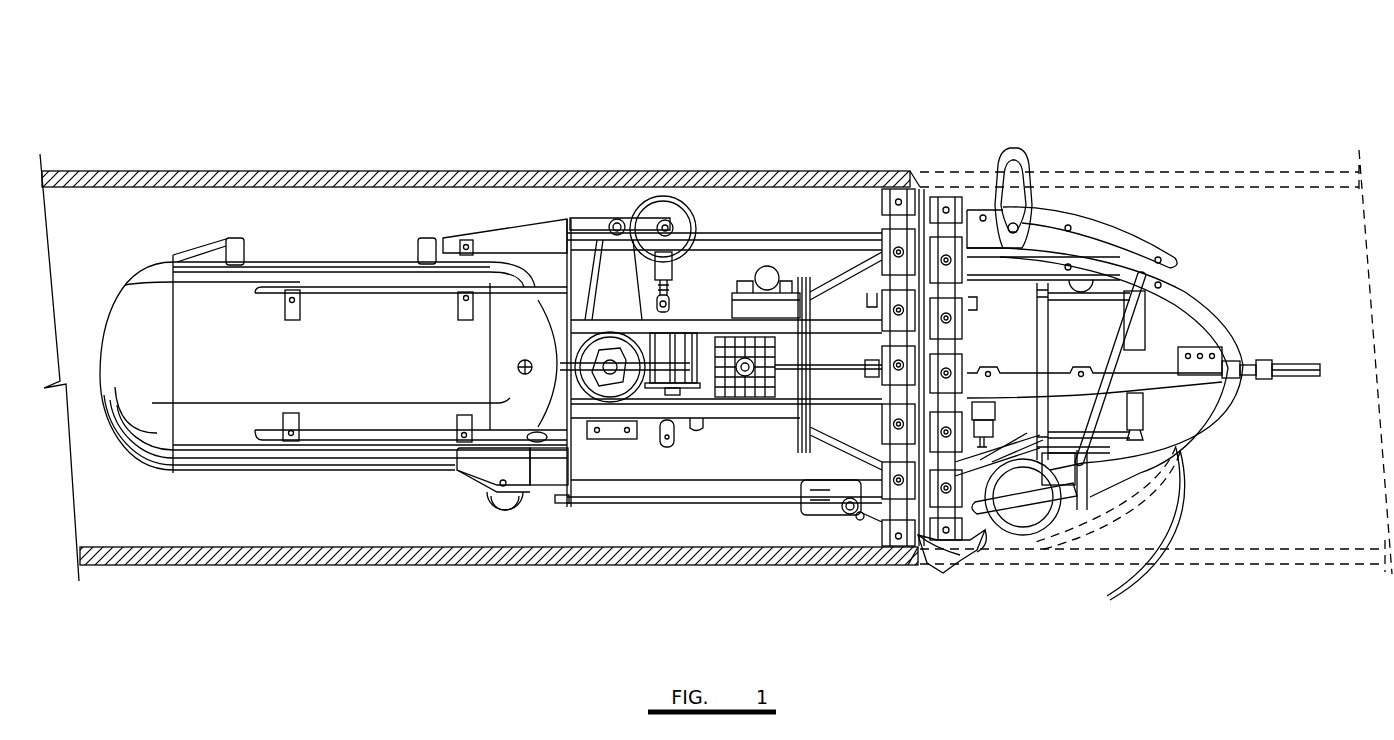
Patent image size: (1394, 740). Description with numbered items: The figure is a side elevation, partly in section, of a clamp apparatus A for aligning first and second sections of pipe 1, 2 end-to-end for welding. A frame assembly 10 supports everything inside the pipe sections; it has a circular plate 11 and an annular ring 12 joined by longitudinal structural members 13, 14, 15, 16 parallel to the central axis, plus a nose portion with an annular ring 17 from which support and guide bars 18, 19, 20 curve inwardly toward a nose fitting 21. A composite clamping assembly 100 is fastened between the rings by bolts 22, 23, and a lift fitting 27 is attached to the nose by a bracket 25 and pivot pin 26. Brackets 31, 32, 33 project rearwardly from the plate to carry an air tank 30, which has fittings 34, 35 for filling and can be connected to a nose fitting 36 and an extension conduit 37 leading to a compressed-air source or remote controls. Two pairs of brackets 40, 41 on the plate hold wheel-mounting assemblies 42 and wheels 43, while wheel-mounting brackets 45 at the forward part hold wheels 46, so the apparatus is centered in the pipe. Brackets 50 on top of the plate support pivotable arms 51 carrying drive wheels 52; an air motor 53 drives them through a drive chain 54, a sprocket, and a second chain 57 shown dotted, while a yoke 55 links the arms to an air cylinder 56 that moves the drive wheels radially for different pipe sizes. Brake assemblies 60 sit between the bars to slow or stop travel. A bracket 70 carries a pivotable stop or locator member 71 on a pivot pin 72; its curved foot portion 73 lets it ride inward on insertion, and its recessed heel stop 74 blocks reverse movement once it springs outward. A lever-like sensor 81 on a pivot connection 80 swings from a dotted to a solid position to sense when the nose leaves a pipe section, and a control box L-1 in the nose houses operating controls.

The first section of pipe 1 is at (238, 562).
The second section of pipe 2 is at (1300, 556).
The frame assembly 10 is at (762, 212).
The circular plate 11 is at (565, 470).
The annular ring 12 is at (873, 222).
The longitudinal structural member 13 is at (705, 500).
The longitudinal structural member 14 is at (712, 428).
The longitudinal structural member 15 is at (740, 310).
The longitudinal structural member 16 is at (757, 233).
The annular ring 17 is at (990, 208).
The support and guide bar 18 is at (1170, 290).
The support and guide bar 19 is at (1200, 420).
The support and guide bar 20 is at (1190, 385).
The nose fitting 21 is at (1218, 350).
The bolt 22 is at (868, 285).
The bolt 23 is at (866, 357).
The bracket 25 is at (1040, 240).
The pivot pin 26 is at (1025, 225).
The lift fitting 27 is at (1008, 148).
The air tank 30 is at (247, 372).
The bracket 31 is at (387, 430).
The bracket 32 is at (372, 300).
The bracket 33 is at (497, 240).
The fitting 34 is at (425, 238).
The fitting 35 is at (235, 236).
The fitting 36 is at (1258, 380).
The extension conduit 37 is at (1290, 366).
The bracket 40 is at (548, 500).
The bracket 41 is at (540, 485).
The wheel-mounting assembly 42 is at (462, 468).
The wheel 43 is at (483, 505).
The wheel-mounting bracket 45 is at (1070, 507).
The wheel 46 is at (1025, 530).
The bracket 50 is at (533, 216).
The pivotable arm 51 is at (650, 222).
The drive wheel 52 is at (668, 216).
The air motor 53 is at (623, 388).
The drive chain 54 is at (593, 250).
The yoke 55 is at (668, 266).
The air cylinder 56 is at (668, 350).
The chain 57 is at (607, 220).
The brake assembly 60 is at (745, 376).
The bracket 70 is at (826, 518).
The stop or locator member 71 is at (953, 567).
The pivot pin 72 is at (853, 515).
The curved foot portion 73 is at (985, 570).
The recessed heel stop 74 is at (922, 550).
The pivot connection 80 is at (1182, 452).
The lever-like sensor 81 is at (1138, 582).
The composite clamping assembly 100 is at (995, 333).
The control box L-1 is at (1192, 346).
The clamp apparatus A is at (686, 515).